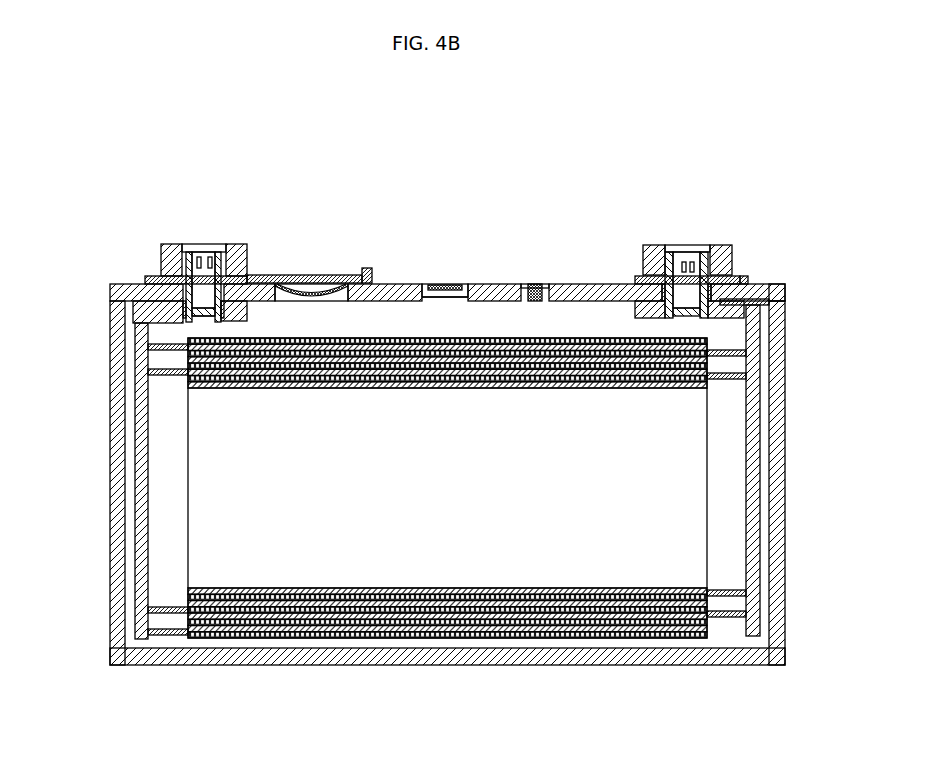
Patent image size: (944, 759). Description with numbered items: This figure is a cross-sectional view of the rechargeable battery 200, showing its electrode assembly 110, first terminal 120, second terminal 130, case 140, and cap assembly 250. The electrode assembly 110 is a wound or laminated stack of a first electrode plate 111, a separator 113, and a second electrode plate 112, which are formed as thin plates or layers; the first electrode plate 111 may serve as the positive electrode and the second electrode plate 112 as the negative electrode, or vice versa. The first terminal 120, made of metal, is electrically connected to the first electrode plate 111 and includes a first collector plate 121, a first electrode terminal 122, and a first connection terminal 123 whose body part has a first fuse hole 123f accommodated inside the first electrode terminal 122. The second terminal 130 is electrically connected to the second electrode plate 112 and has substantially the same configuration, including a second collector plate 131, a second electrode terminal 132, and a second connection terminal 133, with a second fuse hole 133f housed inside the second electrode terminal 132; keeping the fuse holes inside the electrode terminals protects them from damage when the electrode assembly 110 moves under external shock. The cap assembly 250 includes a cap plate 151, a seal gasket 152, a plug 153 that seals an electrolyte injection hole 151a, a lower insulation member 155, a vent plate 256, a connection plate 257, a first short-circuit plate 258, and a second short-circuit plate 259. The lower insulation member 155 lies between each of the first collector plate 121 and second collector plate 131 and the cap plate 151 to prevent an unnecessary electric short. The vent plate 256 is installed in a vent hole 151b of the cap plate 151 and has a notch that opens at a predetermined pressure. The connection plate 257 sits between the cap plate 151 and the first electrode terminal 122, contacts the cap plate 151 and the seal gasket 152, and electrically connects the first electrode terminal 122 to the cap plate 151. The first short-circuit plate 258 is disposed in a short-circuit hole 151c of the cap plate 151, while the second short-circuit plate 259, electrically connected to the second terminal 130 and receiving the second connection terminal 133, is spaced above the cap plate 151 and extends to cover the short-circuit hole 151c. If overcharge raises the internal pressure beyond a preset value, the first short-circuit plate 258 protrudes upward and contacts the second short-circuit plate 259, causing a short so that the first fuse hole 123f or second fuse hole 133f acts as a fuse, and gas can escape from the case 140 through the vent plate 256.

The rechargeable battery 200 is at (779, 134).
The electrode assembly 110 is at (538, 652).
The first electrode plate 111 is at (610, 615).
The second electrode plate 112 is at (325, 613).
The separator 113 is at (465, 616).
The first terminal 120 is at (676, 239).
The first collector plate 121 is at (762, 480).
The first electrode terminal 122 is at (657, 245).
The first connection terminal 123 is at (732, 262).
The first fuse hole 123f is at (690, 257).
The second terminal 130 is at (215, 241).
The second collector plate 131 is at (136, 480).
The second electrode terminal 132 is at (233, 245).
The second connection terminal 133 is at (170, 283).
The second fuse hole 133f is at (209, 258).
The case 140 is at (786, 592).
The cap plate 151 is at (411, 284).
The electrolyte injection hole 151a is at (533, 302).
The vent hole 151b is at (432, 302).
The short-circuit hole 151c is at (338, 300).
The seal gasket 152 is at (150, 283).
The plug 153 is at (533, 284).
The lower insulation member 155 is at (786, 303).
The cap assembly 250 is at (308, 253).
The vent plate 256 is at (464, 283).
The connection plate 257 is at (640, 275).
The first short-circuit plate 258 is at (333, 288).
The second short-circuit plate 259 is at (273, 274).